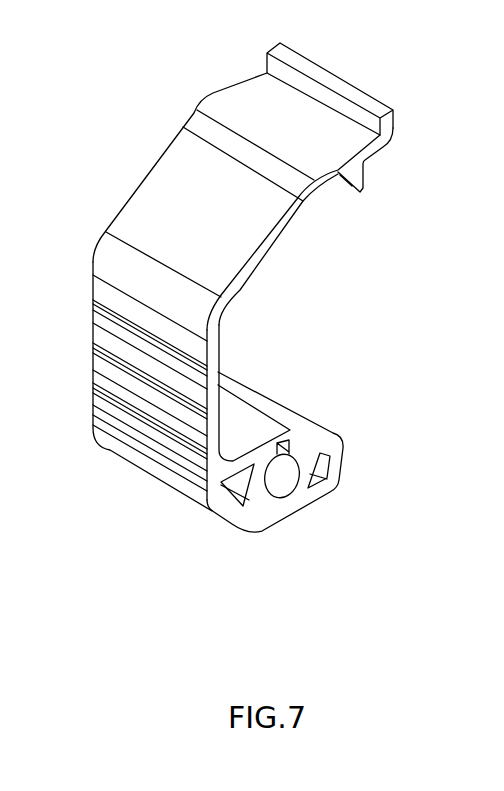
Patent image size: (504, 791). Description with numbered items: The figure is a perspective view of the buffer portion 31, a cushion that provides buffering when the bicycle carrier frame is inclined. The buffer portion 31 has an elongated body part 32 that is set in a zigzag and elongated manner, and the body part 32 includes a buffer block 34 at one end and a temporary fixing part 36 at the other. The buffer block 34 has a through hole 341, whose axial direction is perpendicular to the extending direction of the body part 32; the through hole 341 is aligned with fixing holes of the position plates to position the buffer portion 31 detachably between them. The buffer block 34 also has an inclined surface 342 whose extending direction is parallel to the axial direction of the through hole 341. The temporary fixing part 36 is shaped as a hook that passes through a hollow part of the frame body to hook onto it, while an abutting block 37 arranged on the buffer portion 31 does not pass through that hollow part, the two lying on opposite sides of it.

The buffer portion 31 is at (140, 182).
The body part 32 is at (120, 212).
The buffer block 34 is at (345, 463).
The through hole 341 is at (283, 496).
The inclined surface 342 is at (286, 421).
The temporary fixing part 36 is at (345, 90).
The abutting block 37 is at (367, 175).